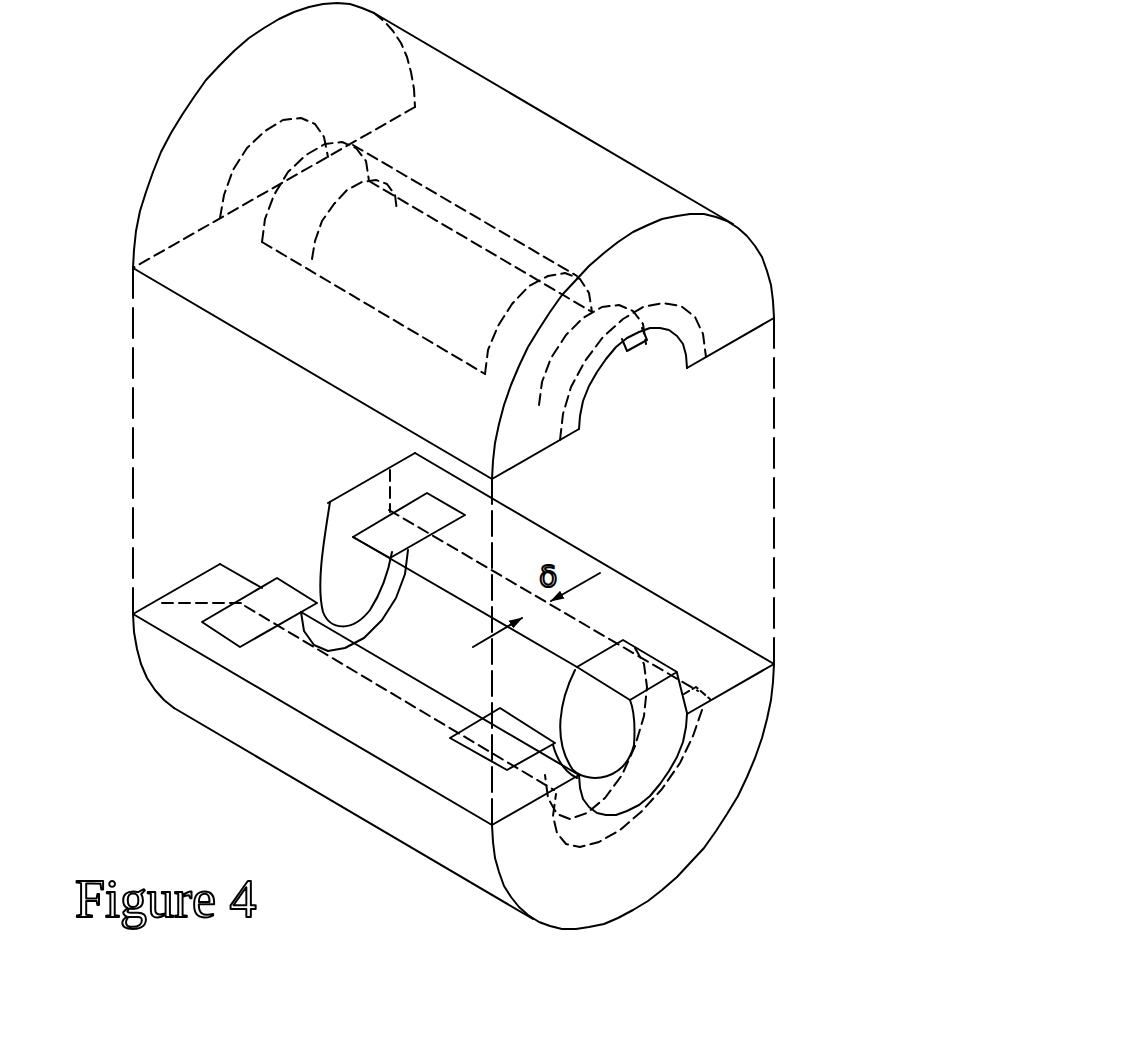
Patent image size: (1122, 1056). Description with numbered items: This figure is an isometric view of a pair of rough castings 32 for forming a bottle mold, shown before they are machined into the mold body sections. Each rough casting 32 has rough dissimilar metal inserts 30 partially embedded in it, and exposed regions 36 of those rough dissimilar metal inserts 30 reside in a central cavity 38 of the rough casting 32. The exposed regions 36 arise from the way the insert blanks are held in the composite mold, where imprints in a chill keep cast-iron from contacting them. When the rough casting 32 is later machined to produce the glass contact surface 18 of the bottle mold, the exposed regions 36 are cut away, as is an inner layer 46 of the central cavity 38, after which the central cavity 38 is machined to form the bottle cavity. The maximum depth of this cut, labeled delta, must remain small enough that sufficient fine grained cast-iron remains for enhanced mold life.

The glass contact surface 18 is at (383, 692).
The rough dissimilar metal inserts 30 is at (648, 345).
The rough castings 32 is at (700, 188).
The exposed regions 36 is at (330, 642).
The central cavity 38 is at (603, 380).
The inner layer 46 is at (305, 632).